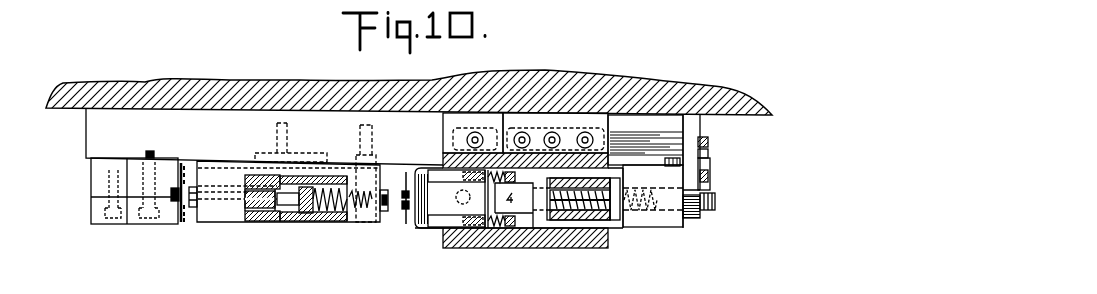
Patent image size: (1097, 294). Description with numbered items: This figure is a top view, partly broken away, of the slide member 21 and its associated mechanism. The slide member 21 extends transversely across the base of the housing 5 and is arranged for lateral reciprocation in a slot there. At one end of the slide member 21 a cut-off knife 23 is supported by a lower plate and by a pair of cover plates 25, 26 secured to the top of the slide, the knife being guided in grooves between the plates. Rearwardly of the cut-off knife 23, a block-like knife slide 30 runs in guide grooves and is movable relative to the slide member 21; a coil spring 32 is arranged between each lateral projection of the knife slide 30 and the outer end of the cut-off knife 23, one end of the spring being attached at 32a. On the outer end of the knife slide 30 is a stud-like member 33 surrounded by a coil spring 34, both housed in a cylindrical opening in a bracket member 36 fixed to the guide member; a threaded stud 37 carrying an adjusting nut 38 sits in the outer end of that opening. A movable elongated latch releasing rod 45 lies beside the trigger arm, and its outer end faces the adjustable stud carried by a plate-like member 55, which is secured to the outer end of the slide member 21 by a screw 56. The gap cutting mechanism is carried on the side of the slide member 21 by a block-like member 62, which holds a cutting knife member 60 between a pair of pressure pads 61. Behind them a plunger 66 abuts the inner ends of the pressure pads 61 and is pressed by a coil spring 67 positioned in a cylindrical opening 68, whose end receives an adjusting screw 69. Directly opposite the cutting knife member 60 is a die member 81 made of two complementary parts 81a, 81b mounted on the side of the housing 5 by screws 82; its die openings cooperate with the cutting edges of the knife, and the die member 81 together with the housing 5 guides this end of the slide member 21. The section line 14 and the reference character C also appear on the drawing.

The housing 5 is at (251, 82).
The slide member 21 is at (300, 124).
The cover plate 25 is at (484, 118).
The cover plate 26 is at (560, 122).
The latch releasing rod 45 is at (634, 162).
The screw 56 is at (703, 142).
The plate-like member 55 is at (702, 153).
The adjusting nut 38 is at (697, 191).
The threaded stud 37 is at (713, 208).
The bracket member 36 is at (671, 226).
The stud-like member 33 is at (619, 214).
The coil spring 34 is at (582, 221).
The knife slide 30 is at (543, 224).
The coil spring 32 is at (485, 174).
The spring attachment point 32a is at (511, 182).
The cut-off knife 23 is at (438, 208).
The section line 14 is at (73, 192).
The bracket C is at (187, 220).
The block-like member 62 is at (212, 177).
The cutting knife member 60 is at (265, 192).
The pressure pads 61 is at (270, 195).
The plunger 66 is at (295, 217).
The coil spring 67 is at (320, 220).
The cylindrical opening 68 is at (346, 222).
The adjusting screw 69 is at (386, 190).
The die member 81 is at (115, 233).
The die part 81a is at (95, 175).
The die part 81b is at (94, 221).
The screws 82 is at (145, 226).